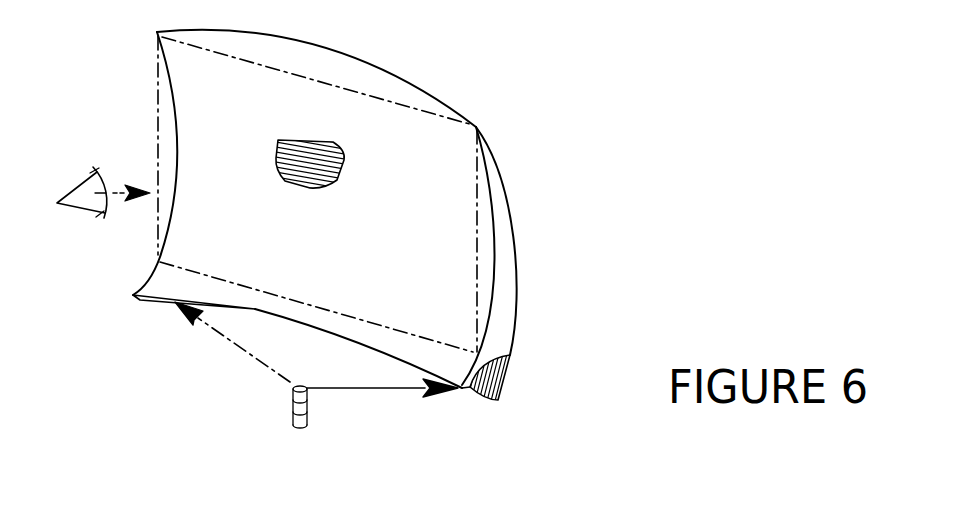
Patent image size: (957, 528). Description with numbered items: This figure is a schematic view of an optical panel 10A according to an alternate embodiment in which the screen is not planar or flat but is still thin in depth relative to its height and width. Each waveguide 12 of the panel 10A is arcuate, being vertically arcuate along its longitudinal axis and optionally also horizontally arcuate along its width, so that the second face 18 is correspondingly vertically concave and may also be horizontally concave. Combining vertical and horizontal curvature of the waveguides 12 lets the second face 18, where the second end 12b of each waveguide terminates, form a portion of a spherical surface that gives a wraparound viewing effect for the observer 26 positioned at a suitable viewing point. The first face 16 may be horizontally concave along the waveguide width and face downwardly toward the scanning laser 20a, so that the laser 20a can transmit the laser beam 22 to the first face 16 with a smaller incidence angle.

The optical panel 10A is at (503, 167).
The waveguide 12 is at (515, 376).
The second end 12b is at (313, 186).
The first face 16 is at (483, 393).
The second face 18 is at (485, 247).
The scanning laser 20a is at (310, 412).
The laser beam 22 is at (366, 388).
The observer 26 is at (73, 207).